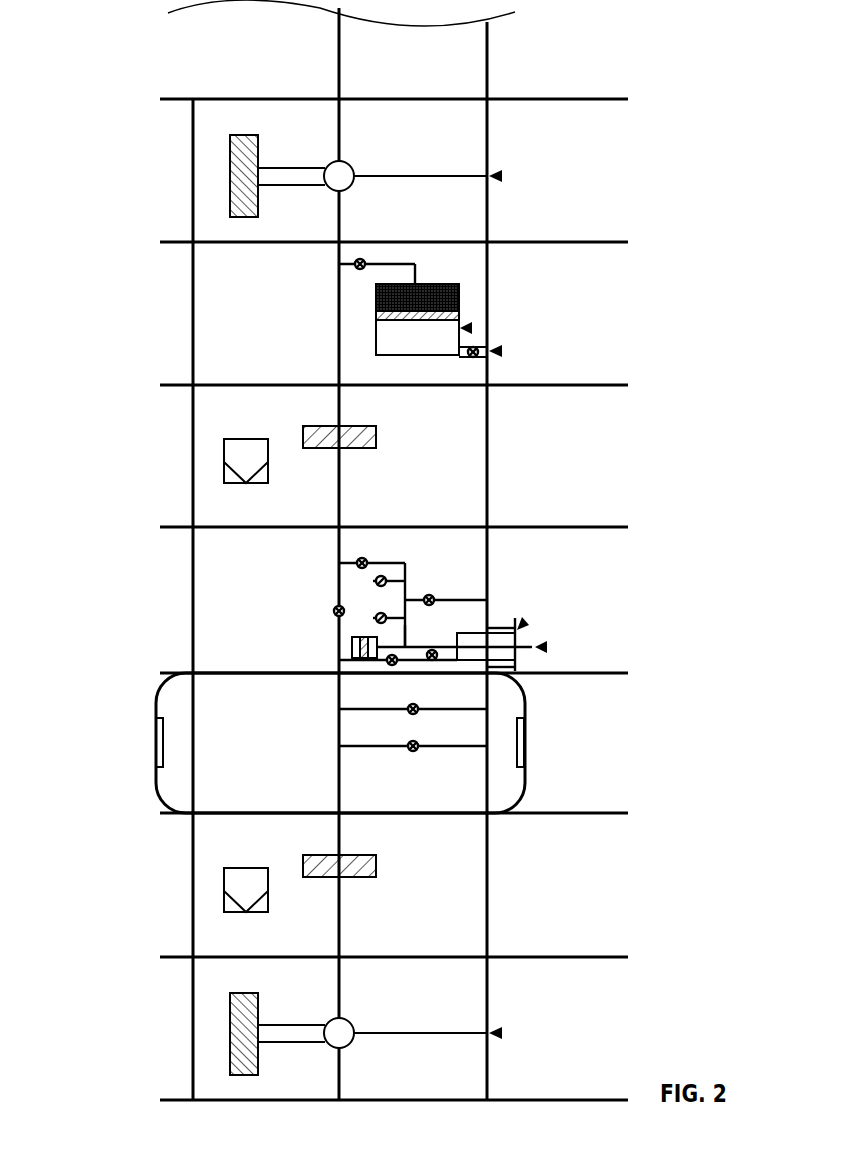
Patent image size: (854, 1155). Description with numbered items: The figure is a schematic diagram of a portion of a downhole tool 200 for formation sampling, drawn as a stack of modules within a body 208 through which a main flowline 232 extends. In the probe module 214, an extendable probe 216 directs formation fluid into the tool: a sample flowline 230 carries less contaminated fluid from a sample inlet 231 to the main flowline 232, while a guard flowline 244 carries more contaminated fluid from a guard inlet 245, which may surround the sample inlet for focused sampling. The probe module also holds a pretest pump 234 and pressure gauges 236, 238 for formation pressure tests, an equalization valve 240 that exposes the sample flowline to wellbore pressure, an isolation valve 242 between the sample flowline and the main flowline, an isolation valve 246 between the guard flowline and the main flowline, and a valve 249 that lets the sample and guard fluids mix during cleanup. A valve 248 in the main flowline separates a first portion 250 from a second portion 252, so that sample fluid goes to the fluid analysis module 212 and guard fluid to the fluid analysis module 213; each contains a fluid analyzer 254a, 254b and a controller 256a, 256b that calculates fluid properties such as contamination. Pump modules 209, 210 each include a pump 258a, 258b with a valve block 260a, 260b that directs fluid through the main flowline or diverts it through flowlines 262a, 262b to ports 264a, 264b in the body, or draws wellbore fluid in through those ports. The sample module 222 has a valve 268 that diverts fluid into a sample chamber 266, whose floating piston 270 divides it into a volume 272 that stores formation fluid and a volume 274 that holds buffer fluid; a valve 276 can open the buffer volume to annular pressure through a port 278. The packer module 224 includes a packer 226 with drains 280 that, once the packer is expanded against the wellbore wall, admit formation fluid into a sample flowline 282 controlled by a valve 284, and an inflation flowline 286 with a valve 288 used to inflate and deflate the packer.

The downhole tool 200 is at (104, 122).
The body 208 is at (489, 67).
The pump module 209 is at (489, 997).
The pump module 210 is at (489, 142).
The fluid analysis module 212 is at (489, 461).
The fluid analysis module 213 is at (489, 892).
The probe module 214 is at (191, 612).
The extendable probe 216 is at (516, 616).
The sample module 222 is at (191, 300).
The packer module 224 is at (340, 743).
The packer 226 is at (526, 702).
The sample flowline 230 is at (410, 630).
The sample inlet 231 is at (546, 648).
The main flowline 232 is at (322, 58).
The pretest pump 234 is at (352, 641).
The pressure gauge 236 is at (374, 619).
The pressure gauge 238 is at (374, 581).
The equalization valve 240 is at (432, 594).
The isolation valve 242 is at (365, 556).
The guard flowline 244 is at (450, 664).
The guard inlet 245 is at (523, 622).
The isolation valve 246 is at (392, 666).
The valve 248 is at (334, 608).
The valve 249 is at (432, 661).
The first portion of the main flowline 250 is at (337, 489).
The second portion of the main flowline 252 is at (337, 918).
The fluid analyzer 254a is at (378, 438).
The fluid analyzer 254b is at (378, 867).
The controller 256a is at (223, 455).
The controller 256b is at (223, 884).
The pump 258a is at (228, 178).
The pump 258b is at (228, 1036).
The valve block 260a is at (352, 167).
The valve block 260b is at (352, 1024).
The flowline 262a is at (413, 178).
The flowline 262b is at (413, 1035).
The port 264a is at (500, 177).
The port 264b is at (500, 1034).
The sample chamber 266 is at (471, 328).
The valve 268 is at (358, 272).
The floating piston 270 is at (460, 311).
The volume 272 is at (432, 284).
The volume 274 is at (418, 338).
The valve 276 is at (477, 347).
The port 278 is at (500, 352).
The drains 280 is at (152, 745).
The sample flowline 282 is at (480, 749).
The valve 284 is at (412, 752).
The inflation flowline 286 is at (355, 712).
The valve 288 is at (415, 715).